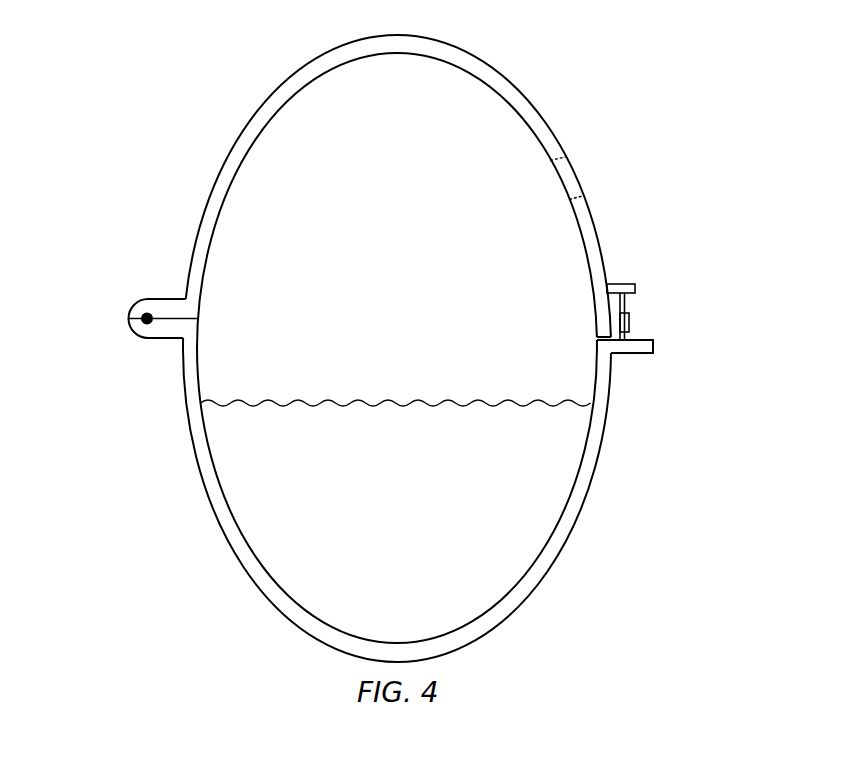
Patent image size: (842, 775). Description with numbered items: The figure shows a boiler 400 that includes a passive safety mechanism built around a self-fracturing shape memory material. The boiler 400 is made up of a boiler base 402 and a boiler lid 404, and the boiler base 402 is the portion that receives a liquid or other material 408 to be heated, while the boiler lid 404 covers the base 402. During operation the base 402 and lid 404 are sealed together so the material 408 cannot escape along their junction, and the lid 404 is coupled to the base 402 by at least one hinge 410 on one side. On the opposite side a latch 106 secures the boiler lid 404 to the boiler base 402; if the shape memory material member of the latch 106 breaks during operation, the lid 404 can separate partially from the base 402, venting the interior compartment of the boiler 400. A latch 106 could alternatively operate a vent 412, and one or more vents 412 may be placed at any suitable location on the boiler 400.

The boiler 400 is at (383, 348).
The boiler base 402 is at (575, 561).
The boiler lid 404 is at (526, 84).
The material 408 is at (266, 559).
The hinge 410 is at (109, 288).
The vent 412 is at (585, 170).
The latch 106 is at (653, 288).